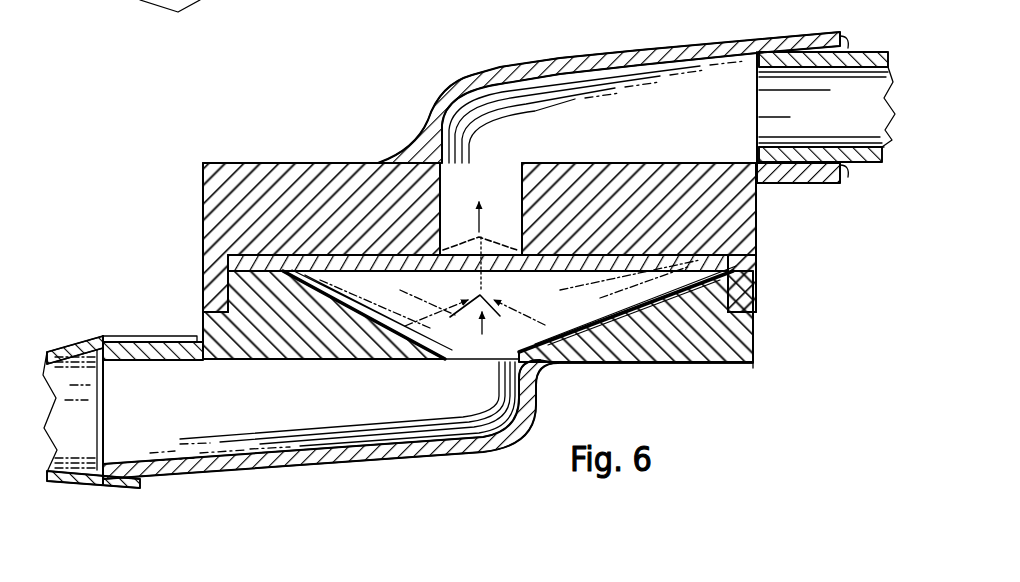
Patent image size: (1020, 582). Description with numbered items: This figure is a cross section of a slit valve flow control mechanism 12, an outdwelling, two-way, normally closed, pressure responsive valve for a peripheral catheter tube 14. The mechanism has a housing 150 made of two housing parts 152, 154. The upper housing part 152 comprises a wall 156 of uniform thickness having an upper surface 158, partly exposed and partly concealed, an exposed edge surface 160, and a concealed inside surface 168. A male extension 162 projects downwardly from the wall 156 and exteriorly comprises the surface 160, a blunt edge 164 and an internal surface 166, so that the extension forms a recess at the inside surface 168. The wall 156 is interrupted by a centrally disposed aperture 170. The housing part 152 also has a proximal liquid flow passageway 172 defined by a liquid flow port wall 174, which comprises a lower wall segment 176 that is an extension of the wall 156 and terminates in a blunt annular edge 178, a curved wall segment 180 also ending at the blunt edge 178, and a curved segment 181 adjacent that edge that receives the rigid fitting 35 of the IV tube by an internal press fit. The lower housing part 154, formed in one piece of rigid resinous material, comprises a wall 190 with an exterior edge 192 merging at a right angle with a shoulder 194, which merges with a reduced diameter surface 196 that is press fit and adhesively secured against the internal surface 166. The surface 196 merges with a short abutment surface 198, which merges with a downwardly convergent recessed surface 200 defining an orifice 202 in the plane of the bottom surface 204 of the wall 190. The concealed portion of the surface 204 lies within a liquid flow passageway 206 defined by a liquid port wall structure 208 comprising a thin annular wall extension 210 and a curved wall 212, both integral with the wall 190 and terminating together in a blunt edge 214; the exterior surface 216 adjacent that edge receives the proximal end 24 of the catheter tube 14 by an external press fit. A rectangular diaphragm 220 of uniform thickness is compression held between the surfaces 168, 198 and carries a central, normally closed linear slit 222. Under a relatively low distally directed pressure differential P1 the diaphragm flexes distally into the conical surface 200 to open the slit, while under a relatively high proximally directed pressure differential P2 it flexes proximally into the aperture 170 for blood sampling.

The slit valve flow control mechanism 12 is at (423, 92).
The catheter tube 14 is at (88, 486).
The proximal end of the catheter tube 24 is at (118, 488).
The rigid fitting 35 is at (851, 121).
The housing 150 is at (765, 254).
The housing part 152 is at (479, 204).
The housing part 154 is at (640, 366).
The wall 156 is at (272, 218).
The upper surface 158 is at (266, 163).
The exposed edge surface 160 is at (203, 190).
The male extension 162 is at (756, 300).
The blunt edge 164 is at (753, 362).
The internal surface 166 is at (756, 330).
The inside surface 168 is at (755, 270).
The aperture 170 is at (530, 180).
The proximal liquid flow passageway 172 is at (714, 125).
The liquid flow port wall 174 is at (613, 93).
The lower wall segment 176 is at (815, 150).
The blunt annular edge 178 is at (832, 86).
The curved wall segment 180 is at (492, 76).
The curved segment 181 is at (813, 81).
The wall 190 is at (277, 330).
The exterior edge 192 is at (200, 336).
The shoulder 194 is at (215, 294).
The reduced diameter surface 196 is at (210, 267).
The abutment surface 198 is at (364, 315).
The downwardly convergent recessed surface 200 is at (360, 286).
The aperture or orifice 202 is at (452, 362).
The bottom surface 204 is at (332, 360).
The liquid flow passageway 206 is at (265, 436).
The liquid port wall structure 208 is at (283, 478).
The annular wall extension 210 is at (133, 426).
The curved wall 212 is at (330, 450).
The blunt edge 214 is at (100, 380).
The exterior surface 216 is at (118, 342).
The diaphragm 220 is at (608, 300).
The linear slit 222 is at (510, 273).
The distally directed pressure differential P1 is at (474, 333).
The proximally directed pressure differential P2 is at (473, 202).